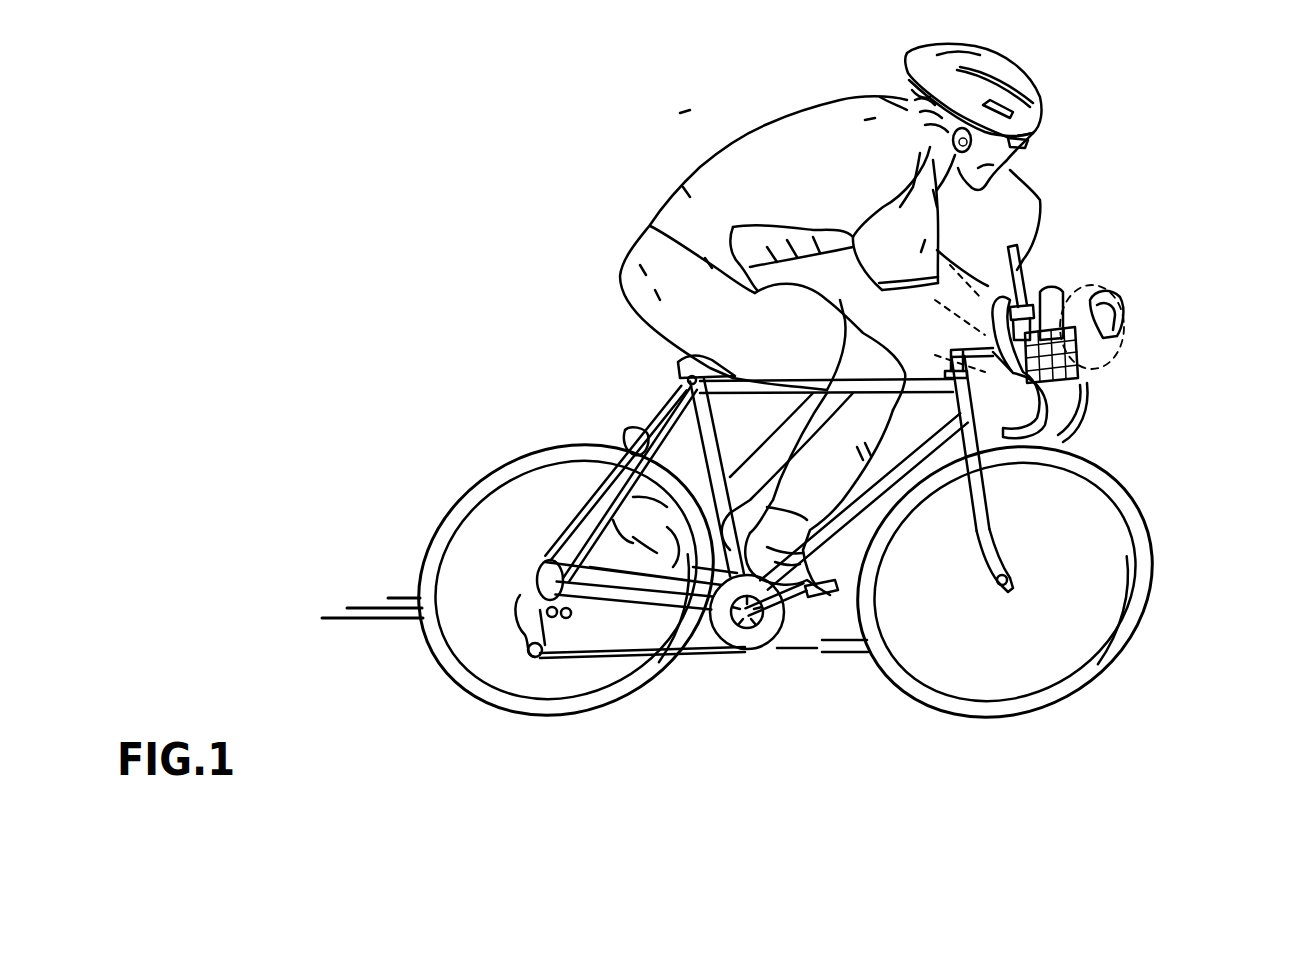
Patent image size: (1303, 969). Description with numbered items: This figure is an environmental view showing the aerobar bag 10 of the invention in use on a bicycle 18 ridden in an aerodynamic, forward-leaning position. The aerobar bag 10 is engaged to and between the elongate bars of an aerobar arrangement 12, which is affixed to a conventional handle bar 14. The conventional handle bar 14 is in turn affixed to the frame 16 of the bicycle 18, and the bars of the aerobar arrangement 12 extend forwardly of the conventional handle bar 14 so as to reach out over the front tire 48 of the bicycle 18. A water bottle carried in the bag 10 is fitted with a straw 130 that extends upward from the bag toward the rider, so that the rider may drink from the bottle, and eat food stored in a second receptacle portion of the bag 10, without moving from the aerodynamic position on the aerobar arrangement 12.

The aerobar bag 10 is at (1112, 338).
The aerobar arrangement 12 is at (1066, 292).
The conventional handle bar 14 is at (1090, 393).
The frame 16 is at (858, 500).
The bicycle 18 is at (612, 402).
The front tire 48 is at (1102, 655).
The straw 130 is at (1030, 258).